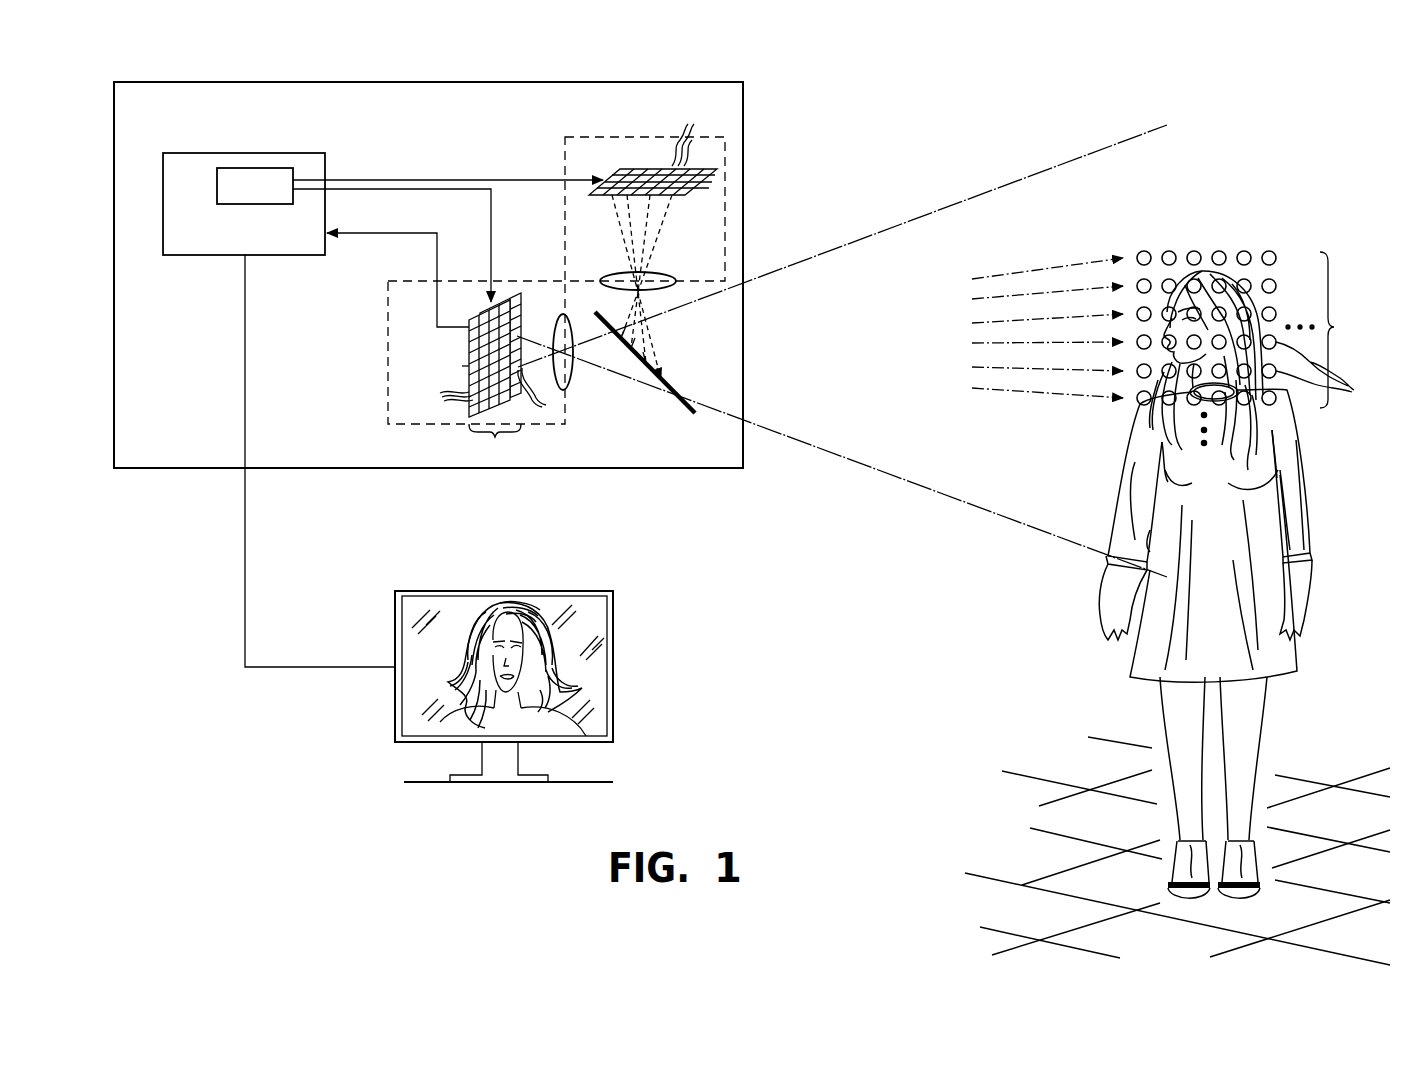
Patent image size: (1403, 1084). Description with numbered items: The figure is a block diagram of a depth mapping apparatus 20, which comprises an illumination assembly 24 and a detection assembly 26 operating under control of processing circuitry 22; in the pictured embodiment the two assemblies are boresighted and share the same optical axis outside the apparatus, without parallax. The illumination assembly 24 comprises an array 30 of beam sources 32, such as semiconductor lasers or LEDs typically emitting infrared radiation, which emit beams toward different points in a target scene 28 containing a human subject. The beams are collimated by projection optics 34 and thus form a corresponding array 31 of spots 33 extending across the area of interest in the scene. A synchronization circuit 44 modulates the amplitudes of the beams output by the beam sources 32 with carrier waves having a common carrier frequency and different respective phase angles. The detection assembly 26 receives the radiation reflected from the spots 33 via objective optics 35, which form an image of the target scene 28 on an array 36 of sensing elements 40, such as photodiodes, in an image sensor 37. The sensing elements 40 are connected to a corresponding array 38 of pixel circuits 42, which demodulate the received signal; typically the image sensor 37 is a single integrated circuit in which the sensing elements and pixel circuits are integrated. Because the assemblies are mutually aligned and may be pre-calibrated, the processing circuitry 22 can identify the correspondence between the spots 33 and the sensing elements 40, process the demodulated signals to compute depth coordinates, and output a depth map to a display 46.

The depth mapping apparatus 20 is at (402, 82).
The processing circuitry 22 is at (238, 153).
The illumination assembly 24 is at (625, 137).
The detection assembly 26 is at (388, 388).
The target scene 28 is at (1226, 278).
The array of beam sources 30 is at (717, 178).
The array of spots 31 is at (1326, 330).
The beam sources 32 is at (695, 130).
The spots 33 is at (1333, 374).
The projection optics 34 is at (662, 279).
The objective optics 35 is at (565, 384).
The array of sensing elements 36 is at (523, 300).
The image sensor 37 is at (495, 446).
The array of pixel circuits 38 is at (469, 366).
The sensing elements 40 is at (544, 397).
The pixel circuits 42 is at (443, 395).
The synchronization circuit 44 is at (217, 187).
The display 46 is at (613, 678).